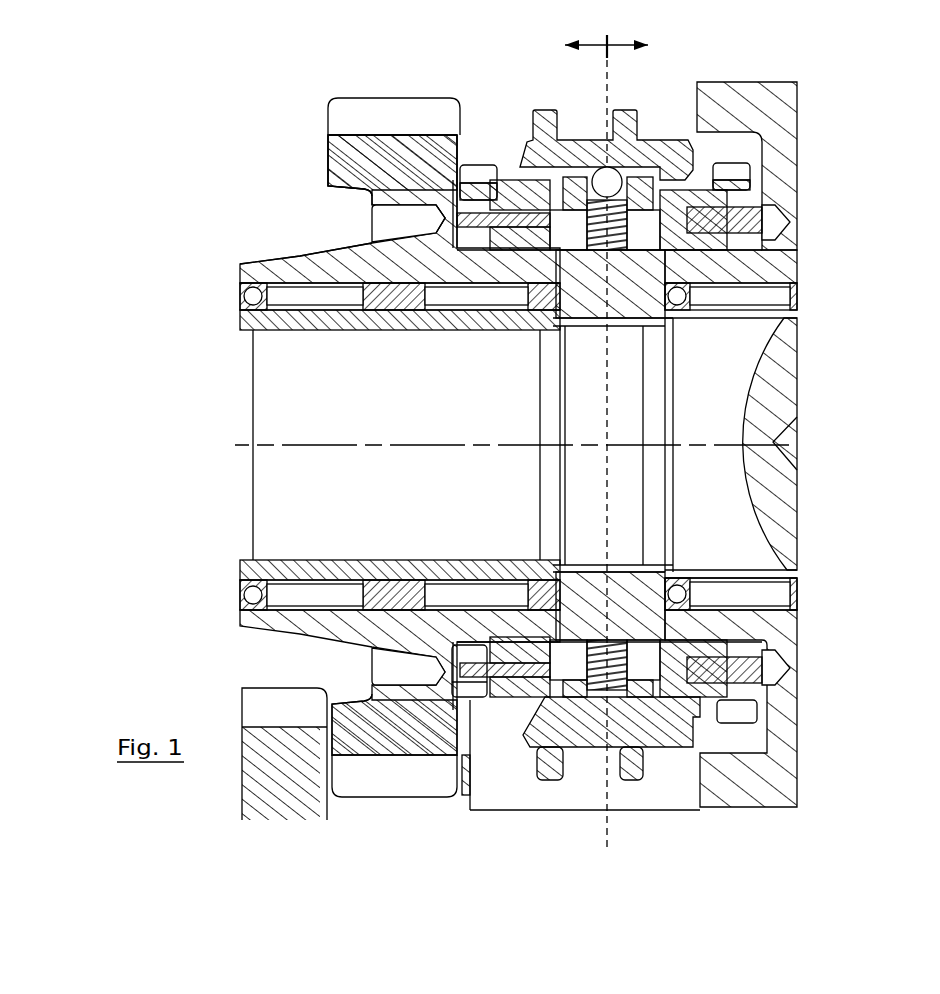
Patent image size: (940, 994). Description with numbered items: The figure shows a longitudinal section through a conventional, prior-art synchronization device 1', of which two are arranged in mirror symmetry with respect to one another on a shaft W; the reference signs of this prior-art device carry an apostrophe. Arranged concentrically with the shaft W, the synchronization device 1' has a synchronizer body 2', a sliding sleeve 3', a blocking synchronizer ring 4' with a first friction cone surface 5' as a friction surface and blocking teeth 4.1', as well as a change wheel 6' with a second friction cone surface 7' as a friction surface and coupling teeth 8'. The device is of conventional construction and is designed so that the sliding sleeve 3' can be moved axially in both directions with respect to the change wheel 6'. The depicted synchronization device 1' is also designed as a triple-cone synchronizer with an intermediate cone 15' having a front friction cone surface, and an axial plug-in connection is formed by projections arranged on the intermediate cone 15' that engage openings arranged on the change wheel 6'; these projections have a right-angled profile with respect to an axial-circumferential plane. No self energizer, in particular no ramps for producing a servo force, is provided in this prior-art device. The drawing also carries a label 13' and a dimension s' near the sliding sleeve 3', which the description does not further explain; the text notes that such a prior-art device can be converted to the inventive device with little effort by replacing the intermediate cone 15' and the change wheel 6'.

The synchronization device 1' is at (539, 434).
The synchronizer body 2' is at (697, 290).
The sliding sleeve 3' is at (606, 160).
The blocking synchronizer ring 4' is at (415, 204).
The blocking teeth 4.1' is at (517, 145).
The first friction cone surface 5' is at (752, 206).
The change wheel 6' is at (368, 159).
The second friction cone surface 7' is at (770, 222).
The coupling teeth 8' is at (469, 133).
The recess 13' is at (358, 223).
The intermediate cone 15' is at (358, 211).
The shaft W is at (395, 502).
The travel s' is at (606, 52).